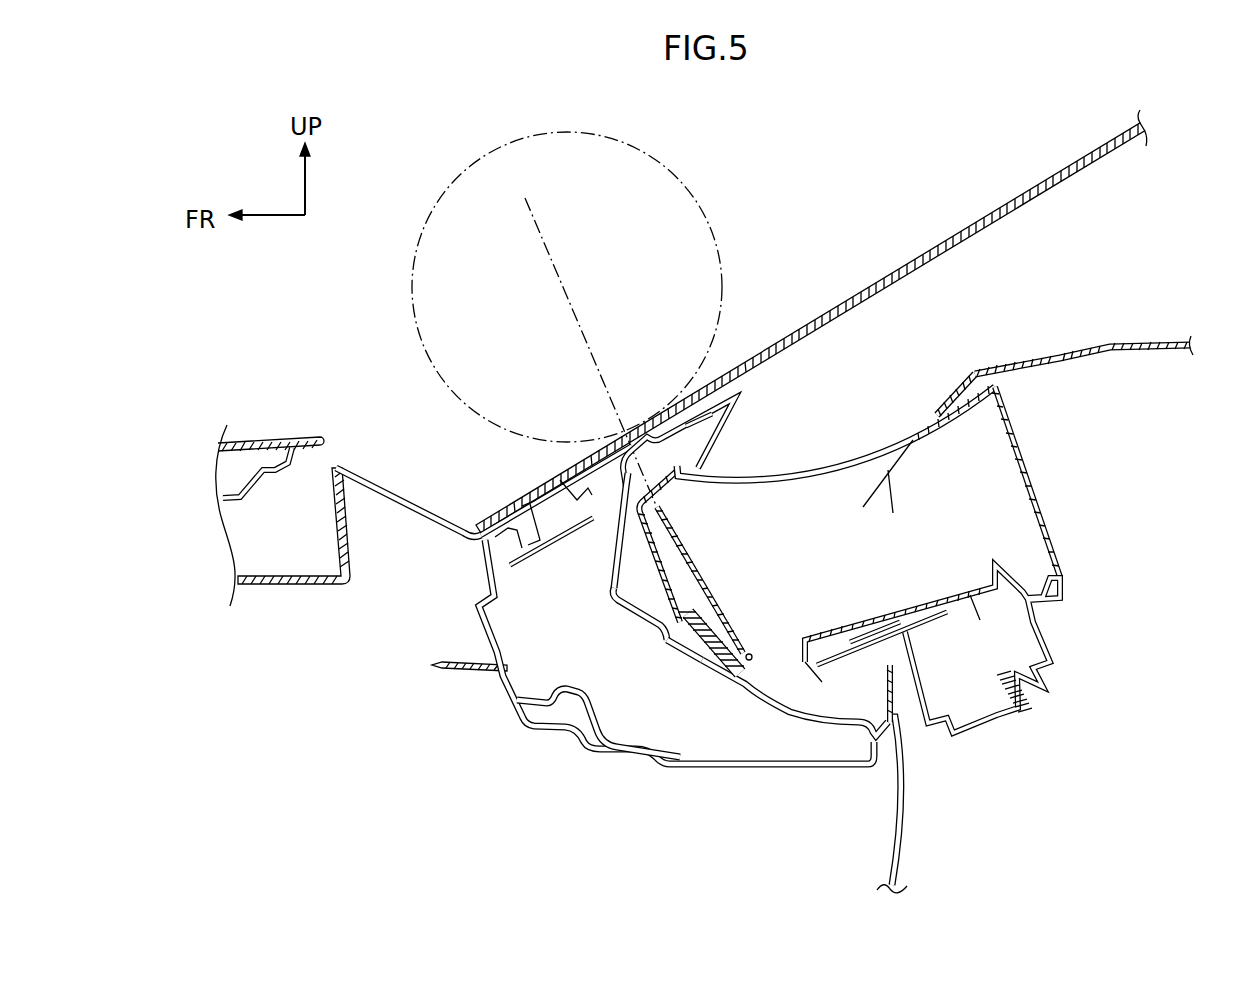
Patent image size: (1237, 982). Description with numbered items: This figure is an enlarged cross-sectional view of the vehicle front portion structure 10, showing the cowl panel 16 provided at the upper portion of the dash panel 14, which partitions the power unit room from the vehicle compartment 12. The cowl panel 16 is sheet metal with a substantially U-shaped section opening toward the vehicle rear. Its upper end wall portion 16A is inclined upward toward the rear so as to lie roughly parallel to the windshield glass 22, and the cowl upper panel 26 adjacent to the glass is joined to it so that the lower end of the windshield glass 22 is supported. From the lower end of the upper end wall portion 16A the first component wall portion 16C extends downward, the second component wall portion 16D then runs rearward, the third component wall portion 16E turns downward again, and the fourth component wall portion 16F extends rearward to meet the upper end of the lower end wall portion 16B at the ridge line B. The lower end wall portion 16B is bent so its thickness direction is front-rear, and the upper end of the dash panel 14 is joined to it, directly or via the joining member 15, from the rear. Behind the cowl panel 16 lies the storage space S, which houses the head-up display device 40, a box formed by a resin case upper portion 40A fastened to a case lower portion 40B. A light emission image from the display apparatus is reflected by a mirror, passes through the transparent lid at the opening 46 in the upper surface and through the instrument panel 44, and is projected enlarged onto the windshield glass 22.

The vehicle front portion structure 10 is at (862, 170).
The vehicle compartment 12 is at (1214, 495).
The dash panel 14 is at (905, 800).
The joining member 15 is at (876, 723).
The cowl panel 16 is at (683, 616).
The upper end wall portion 16A is at (715, 455).
The lower end wall portion 16B is at (845, 735).
The first component wall portion 16C is at (613, 552).
The second component wall portion 16D is at (637, 607).
The third component wall portion 16E is at (653, 632).
The fourth component wall portion 16F is at (706, 685).
The windshield glass 22 is at (822, 310).
The cowl upper panel 26 is at (597, 449).
The head-up display device 40 is at (904, 559).
The case upper portion 40A is at (1043, 518).
The case lower portion 40B is at (1047, 640).
The instrument panel 44 is at (1075, 355).
The opening 46 is at (937, 410).
The ridge line B is at (713, 228).
The storage space S is at (652, 585).